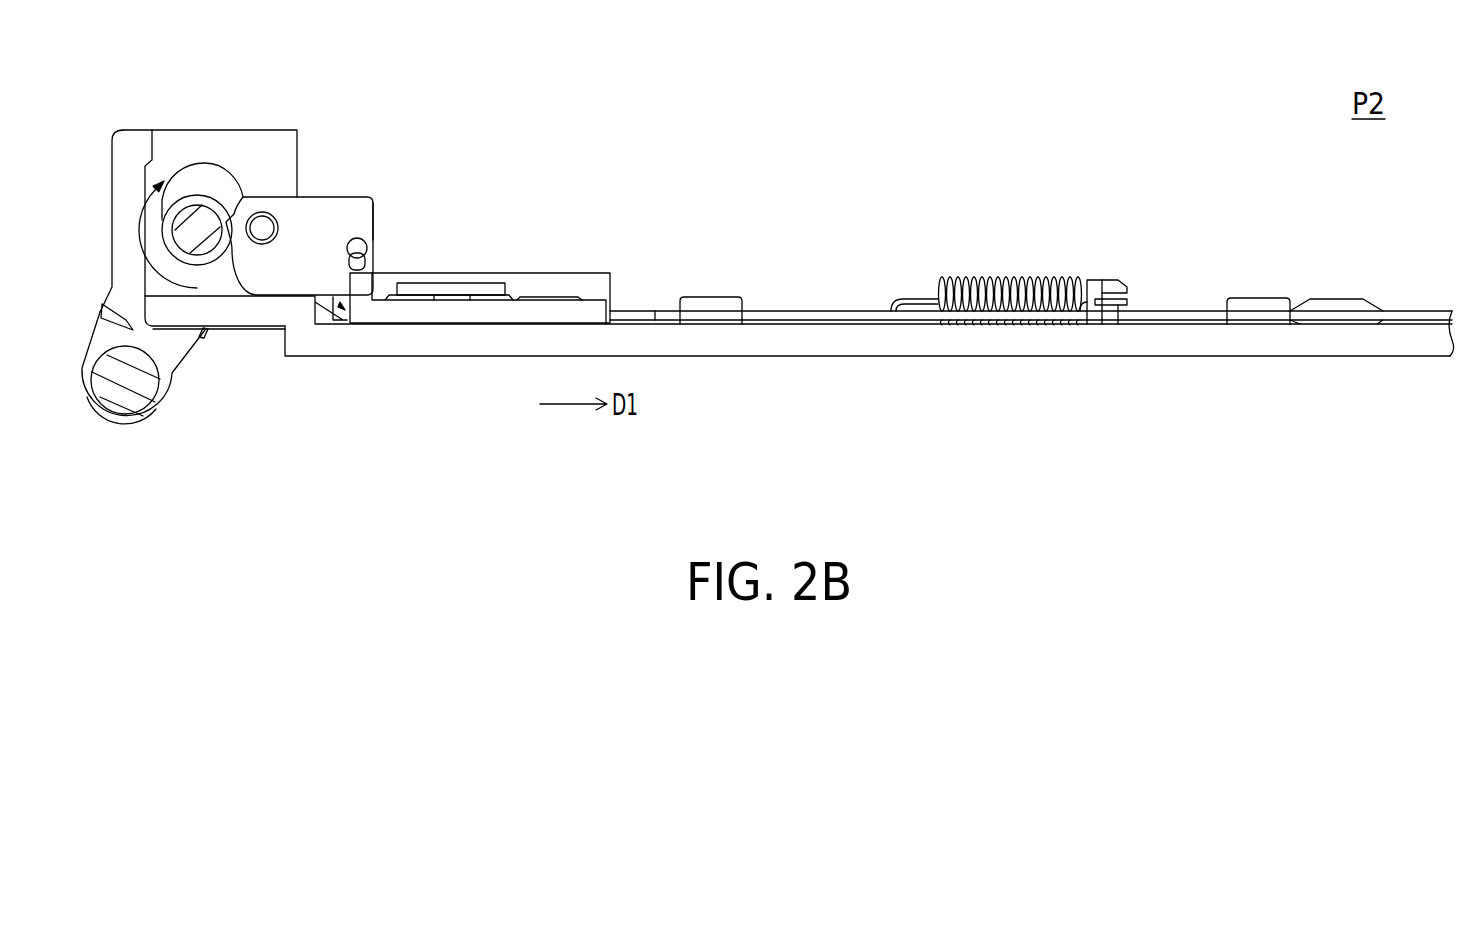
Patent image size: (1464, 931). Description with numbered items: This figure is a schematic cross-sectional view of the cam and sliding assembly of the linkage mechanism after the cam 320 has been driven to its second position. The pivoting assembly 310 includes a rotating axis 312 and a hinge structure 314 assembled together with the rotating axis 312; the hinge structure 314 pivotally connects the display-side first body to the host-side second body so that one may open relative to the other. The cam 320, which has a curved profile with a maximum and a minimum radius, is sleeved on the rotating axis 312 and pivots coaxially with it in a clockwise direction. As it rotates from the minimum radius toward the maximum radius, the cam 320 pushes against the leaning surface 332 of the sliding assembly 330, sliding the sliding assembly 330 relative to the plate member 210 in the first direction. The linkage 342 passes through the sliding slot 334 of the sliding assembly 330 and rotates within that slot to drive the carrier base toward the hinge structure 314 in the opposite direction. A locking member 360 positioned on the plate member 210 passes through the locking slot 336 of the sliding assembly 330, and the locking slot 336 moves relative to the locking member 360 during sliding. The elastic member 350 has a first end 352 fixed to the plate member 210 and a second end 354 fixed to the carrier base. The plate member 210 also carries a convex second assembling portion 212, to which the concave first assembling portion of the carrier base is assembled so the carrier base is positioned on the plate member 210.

The plate member 210 is at (375, 345).
The second assembling portion 212 is at (707, 298).
The pivoting assembly 310 is at (255, 492).
The rotating axis 312 is at (201, 235).
The hinge structure 314 is at (132, 377).
The cam 320 is at (207, 187).
The sliding assembly 330 is at (447, 60).
The leaning surface 332 is at (236, 232).
The sliding slot 334 is at (373, 197).
The locking slot 336 is at (389, 288).
The linkage 342 is at (348, 250).
The elastic member 350 is at (1024, 279).
The first end 352 is at (1128, 286).
The second end 354 is at (898, 306).
The locking member 360 is at (450, 285).